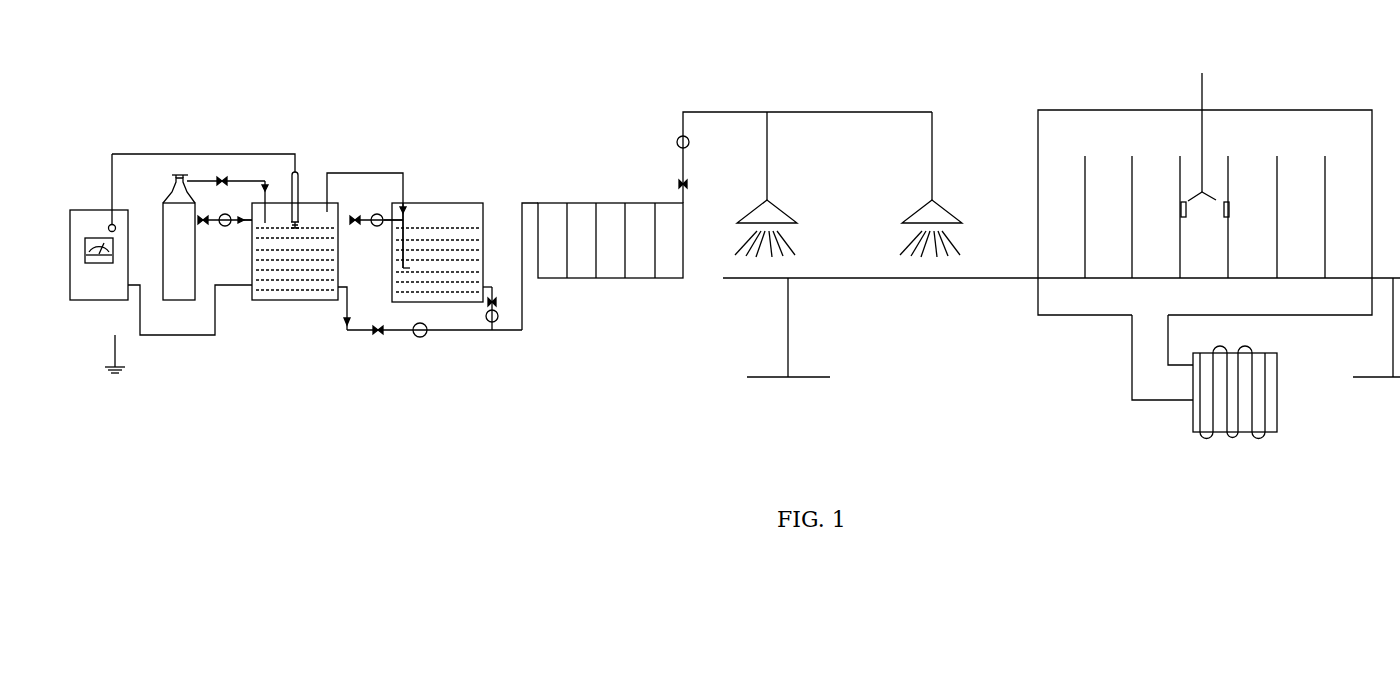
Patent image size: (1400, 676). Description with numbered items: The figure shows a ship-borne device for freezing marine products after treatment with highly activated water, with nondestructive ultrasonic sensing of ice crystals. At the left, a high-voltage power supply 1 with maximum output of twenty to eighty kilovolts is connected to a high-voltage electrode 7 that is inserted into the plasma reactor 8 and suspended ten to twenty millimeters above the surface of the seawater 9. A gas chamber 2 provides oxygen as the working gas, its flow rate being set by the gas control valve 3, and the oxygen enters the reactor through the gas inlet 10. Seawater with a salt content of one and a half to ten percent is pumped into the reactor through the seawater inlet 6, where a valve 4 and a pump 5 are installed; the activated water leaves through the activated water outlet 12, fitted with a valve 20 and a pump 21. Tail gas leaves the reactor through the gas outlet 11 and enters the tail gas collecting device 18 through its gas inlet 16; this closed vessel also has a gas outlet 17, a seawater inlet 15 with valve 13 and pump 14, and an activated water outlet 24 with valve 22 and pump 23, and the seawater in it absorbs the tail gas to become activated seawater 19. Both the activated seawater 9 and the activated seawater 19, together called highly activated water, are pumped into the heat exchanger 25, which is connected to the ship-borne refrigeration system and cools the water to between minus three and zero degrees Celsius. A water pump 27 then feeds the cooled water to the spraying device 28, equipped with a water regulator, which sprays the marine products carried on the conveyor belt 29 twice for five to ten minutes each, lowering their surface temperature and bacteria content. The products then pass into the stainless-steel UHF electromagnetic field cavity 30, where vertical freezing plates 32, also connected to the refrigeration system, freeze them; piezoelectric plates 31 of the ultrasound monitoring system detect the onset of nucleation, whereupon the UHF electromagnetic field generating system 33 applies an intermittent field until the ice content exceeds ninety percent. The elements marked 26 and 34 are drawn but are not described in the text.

The power supply 1 is at (99, 236).
The gas chamber 2 is at (179, 246).
The gas control valve 3 is at (222, 177).
The valve 4 is at (225, 227).
The pump 5 is at (231, 229).
The seawater inlet 6 is at (252, 220).
The high-voltage electrode 7 is at (300, 200).
The plasma reactor 8 is at (255, 303).
The seawater 9 is at (278, 270).
The gas inlet 10 is at (267, 203).
The gas outlet 11 is at (323, 203).
The activated water outlet 12 is at (350, 291).
The valve 13 is at (376, 228).
The pump 14 is at (379, 227).
The seawater inlet 15 is at (390, 215).
The gas inlet 16 is at (405, 205).
The gas outlet 17 is at (456, 203).
The tail gas collecting device 18 is at (485, 243).
The activated seawater 19 is at (415, 272).
The valve 20 is at (434, 338).
The pump 21 is at (426, 338).
The valve 22 is at (501, 308).
The pump 23 is at (500, 317).
The activated water outlet 24 is at (490, 283).
The heat exchanger 25 is at (578, 280).
The valve 26 is at (692, 184).
The water pump 27 is at (693, 143).
The spraying device 28 is at (915, 212).
The conveyor belt 29 is at (862, 283).
The UHF electromagnetic field cavity 30 is at (1112, 110).
The piezoelectric plates of the ultrasound monitoring system 31 is at (1205, 134).
The vertical freezing plates 32 is at (1282, 175).
The UHF electromagnetic field generating system 33 is at (1277, 398).
The supports 34 is at (1073, 340).